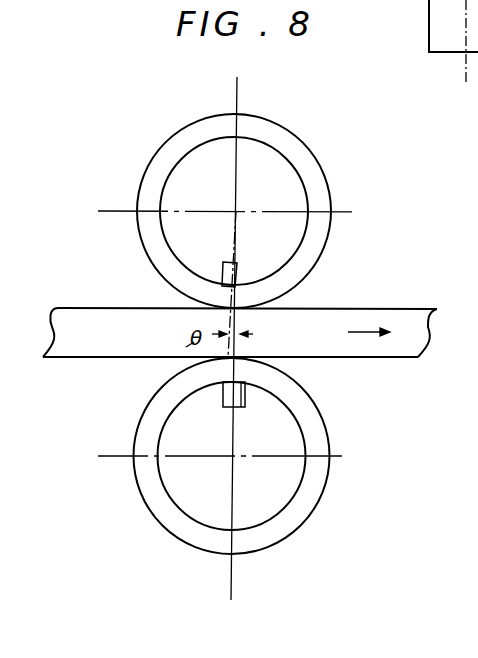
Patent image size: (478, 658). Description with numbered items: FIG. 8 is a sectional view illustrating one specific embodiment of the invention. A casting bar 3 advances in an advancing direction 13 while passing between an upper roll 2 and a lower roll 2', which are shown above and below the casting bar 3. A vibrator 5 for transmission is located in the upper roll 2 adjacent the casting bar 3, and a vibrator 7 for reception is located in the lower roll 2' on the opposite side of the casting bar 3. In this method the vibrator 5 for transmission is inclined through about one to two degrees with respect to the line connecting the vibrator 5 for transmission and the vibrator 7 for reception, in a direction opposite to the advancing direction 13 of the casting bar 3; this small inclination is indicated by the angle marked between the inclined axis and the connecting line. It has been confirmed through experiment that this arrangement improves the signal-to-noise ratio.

The upper roll 2 is at (234, 201).
The lower roll 2' is at (241, 456).
The casting bar 3 is at (95, 320).
The vibrator for transmission 5 is at (238, 268).
The vibrator for reception 7 is at (245, 400).
The advancing direction 13 is at (363, 333).